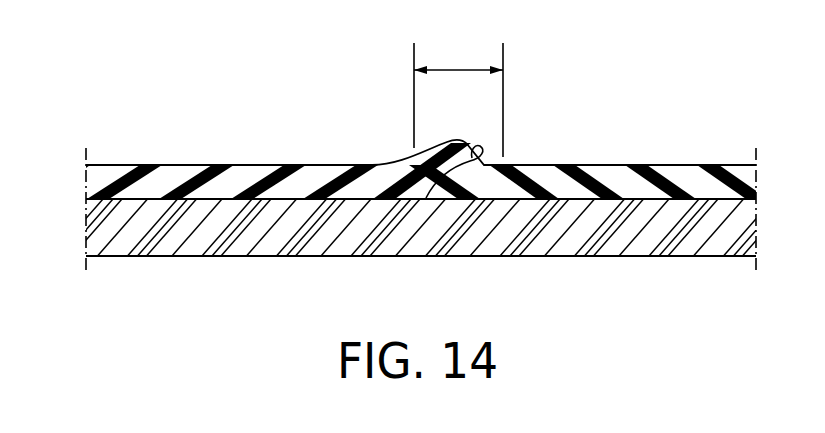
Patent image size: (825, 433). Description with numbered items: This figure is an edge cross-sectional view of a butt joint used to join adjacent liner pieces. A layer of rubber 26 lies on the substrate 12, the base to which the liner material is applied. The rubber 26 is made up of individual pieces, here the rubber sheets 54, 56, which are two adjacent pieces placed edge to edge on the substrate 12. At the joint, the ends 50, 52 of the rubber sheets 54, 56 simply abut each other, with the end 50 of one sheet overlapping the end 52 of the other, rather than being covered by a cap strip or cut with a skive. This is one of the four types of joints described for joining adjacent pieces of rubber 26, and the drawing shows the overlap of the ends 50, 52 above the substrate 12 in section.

The substrate 12 is at (190, 248).
The rubber 26 is at (183, 165).
The end of rubber sheet 50 is at (443, 150).
The end of rubber sheet 52 is at (477, 162).
The rubber sheet 54 is at (255, 165).
The rubber sheet 56 is at (609, 175).